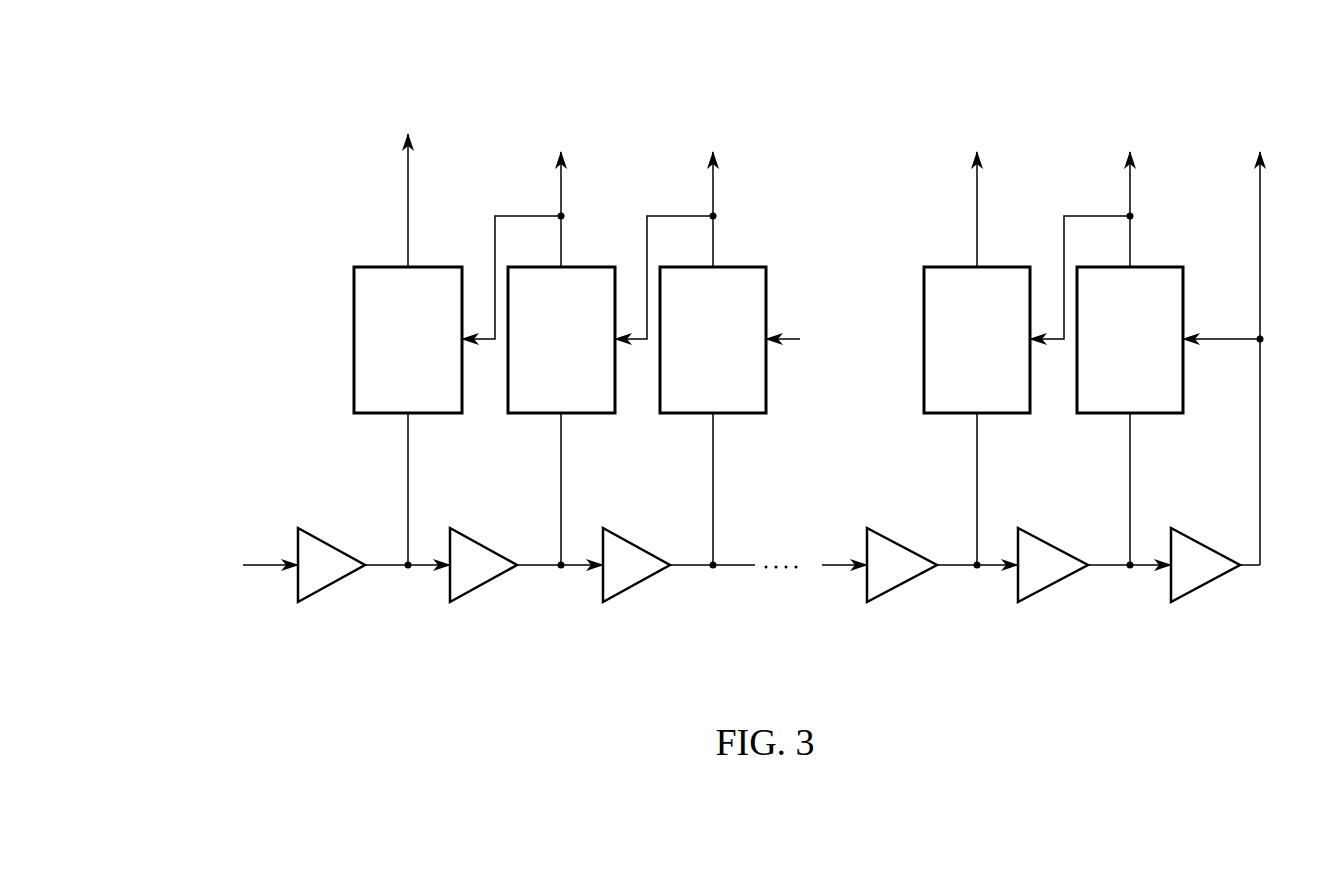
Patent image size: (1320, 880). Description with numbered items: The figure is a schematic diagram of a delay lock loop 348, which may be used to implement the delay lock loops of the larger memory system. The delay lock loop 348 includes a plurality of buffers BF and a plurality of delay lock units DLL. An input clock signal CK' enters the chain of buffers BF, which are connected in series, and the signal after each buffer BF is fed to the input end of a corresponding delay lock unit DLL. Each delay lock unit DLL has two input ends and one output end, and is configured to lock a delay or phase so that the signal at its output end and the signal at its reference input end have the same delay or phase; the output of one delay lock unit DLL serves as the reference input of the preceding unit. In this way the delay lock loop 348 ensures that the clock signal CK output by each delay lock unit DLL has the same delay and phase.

The delay lock loop 348 is at (335, 97).
The delay lock unit DLL is at (803, 390).
The buffer BF is at (779, 589).
The clock signal CK is at (834, 334).
The input clock signal CK' is at (245, 569).